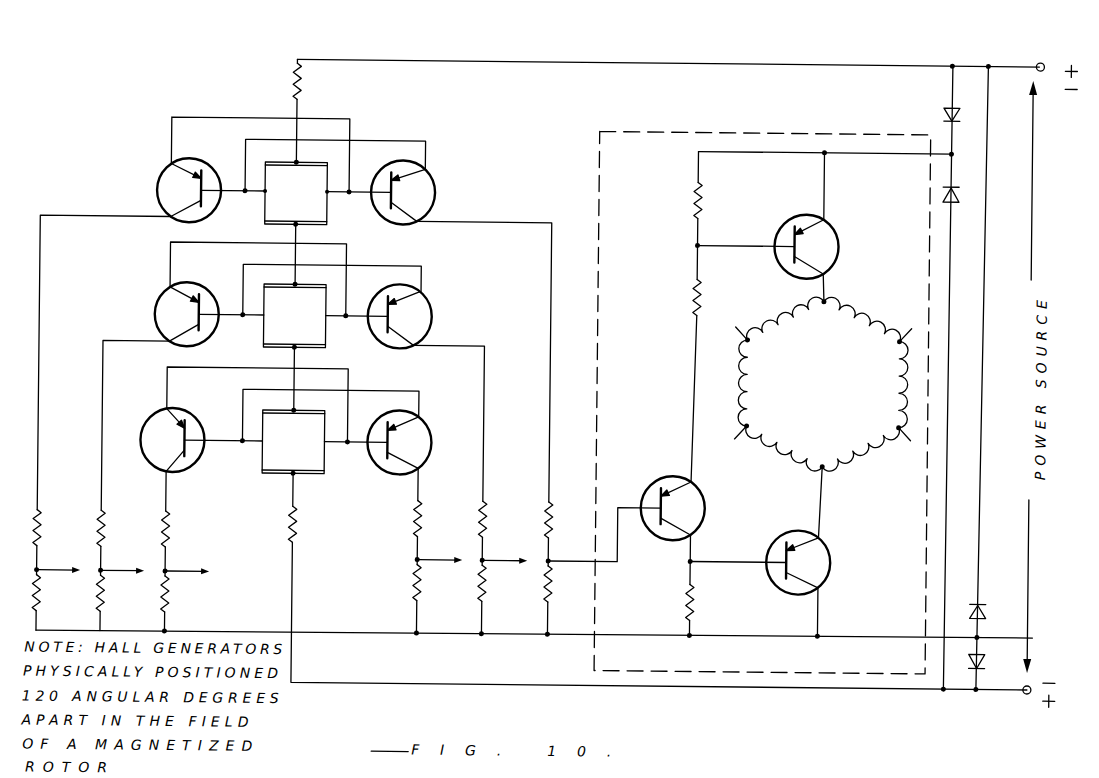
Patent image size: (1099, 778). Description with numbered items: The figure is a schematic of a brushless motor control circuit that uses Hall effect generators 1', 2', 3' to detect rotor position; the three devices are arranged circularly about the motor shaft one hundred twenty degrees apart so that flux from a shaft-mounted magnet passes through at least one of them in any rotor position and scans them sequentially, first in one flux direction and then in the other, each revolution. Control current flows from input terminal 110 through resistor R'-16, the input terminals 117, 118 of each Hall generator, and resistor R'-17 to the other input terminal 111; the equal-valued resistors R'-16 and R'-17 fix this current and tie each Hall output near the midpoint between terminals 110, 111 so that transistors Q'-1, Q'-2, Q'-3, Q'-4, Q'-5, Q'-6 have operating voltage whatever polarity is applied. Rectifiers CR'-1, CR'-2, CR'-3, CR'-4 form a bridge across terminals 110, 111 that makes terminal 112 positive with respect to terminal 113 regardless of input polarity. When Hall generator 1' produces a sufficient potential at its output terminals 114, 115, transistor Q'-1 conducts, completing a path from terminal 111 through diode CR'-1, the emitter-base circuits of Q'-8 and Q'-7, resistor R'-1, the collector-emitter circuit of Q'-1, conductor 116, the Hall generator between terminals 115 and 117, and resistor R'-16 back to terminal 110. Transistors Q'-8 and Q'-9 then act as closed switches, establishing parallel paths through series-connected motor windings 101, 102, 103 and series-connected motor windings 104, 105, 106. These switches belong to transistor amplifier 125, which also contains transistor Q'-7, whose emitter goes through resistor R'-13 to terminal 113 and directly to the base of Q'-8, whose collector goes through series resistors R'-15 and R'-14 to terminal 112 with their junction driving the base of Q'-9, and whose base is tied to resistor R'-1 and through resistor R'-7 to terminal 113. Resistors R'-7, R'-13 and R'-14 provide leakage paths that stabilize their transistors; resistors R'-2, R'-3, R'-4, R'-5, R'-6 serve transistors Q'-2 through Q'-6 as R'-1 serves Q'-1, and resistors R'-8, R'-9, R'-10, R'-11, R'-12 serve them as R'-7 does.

The motor winding 101 is at (790, 443).
The motor winding 102 is at (752, 386).
The motor winding 103 is at (790, 318).
The motor winding 104 is at (856, 446).
The motor winding 105 is at (896, 394).
The motor winding 106 is at (868, 322).
The input terminal 110 is at (1040, 57).
The input terminal 111 is at (1027, 690).
The terminal 112 is at (951, 151).
The terminal 113 is at (1019, 635).
The output terminal 114 is at (326, 197).
The output terminal 115 is at (261, 195).
The conductor 116 is at (378, 143).
The input terminal 117 is at (300, 164).
The input terminal 118 is at (300, 229).
The transistor amplifier 125 is at (695, 112).
The Hall effect generator 1' is at (283, 204).
The Hall effect generator 2' is at (276, 346).
The Hall effect generator 3' is at (284, 454).
The transistor Q'-1 is at (397, 320).
The transistor Q'-2 is at (231, 439).
The transistor Q'-3 is at (364, 382).
The transistor Q'-4 is at (194, 314).
The transistor Q'-5 is at (355, 445).
The transistor Q'-6 is at (225, 377).
The transistor Q'-7 is at (700, 520).
The transistor Q'-8 is at (785, 550).
The transistor Q'-9 is at (794, 227).
The resistor R'-1 is at (602, 542).
The resistor R'-2 is at (199, 554).
The resistor R'-3 is at (504, 547).
The resistor R'-4 is at (56, 561).
The resistor R'-5 is at (439, 547).
The resistor R'-6 is at (120, 561).
The resistor R'-7 is at (563, 600).
The resistor R'-8 is at (191, 604).
The resistor R'-9 is at (498, 599).
The resistor R'-10 is at (55, 603).
The resistor R'-11 is at (437, 599).
The resistor R'-12 is at (120, 603).
The resistor R'-13 is at (722, 598).
The resistor R'-14 is at (727, 199).
The resistor R'-15 is at (725, 363).
The resistor R'-16 is at (331, 111).
The resistor R'-17 is at (658, 581).
The rectifier CR'-1 is at (1020, 658).
The rectifier CR'-2 is at (1018, 611).
The rectifier CR'-3 is at (984, 206).
The rectifier CR'-4 is at (922, 112).